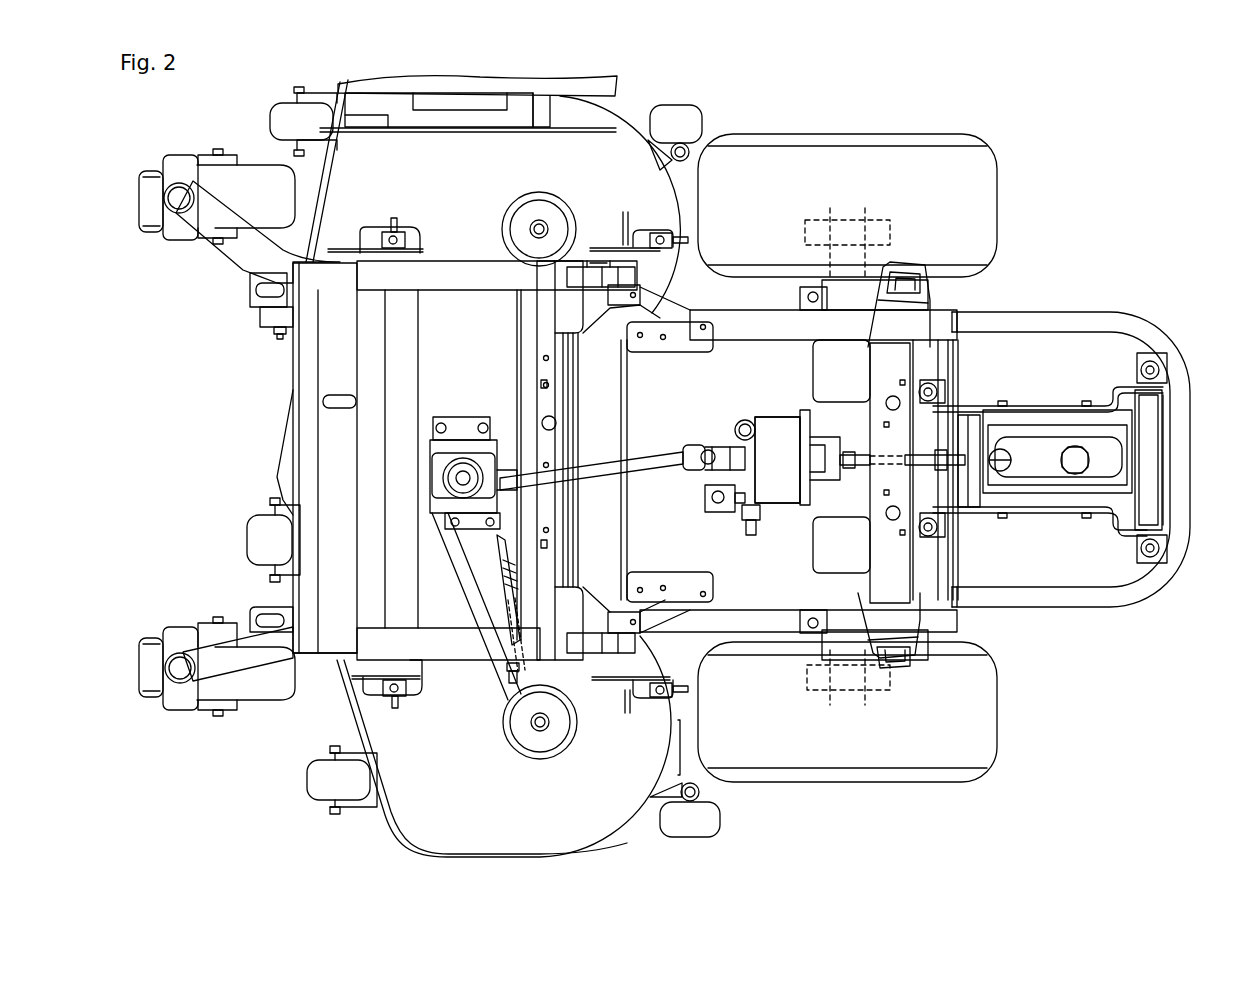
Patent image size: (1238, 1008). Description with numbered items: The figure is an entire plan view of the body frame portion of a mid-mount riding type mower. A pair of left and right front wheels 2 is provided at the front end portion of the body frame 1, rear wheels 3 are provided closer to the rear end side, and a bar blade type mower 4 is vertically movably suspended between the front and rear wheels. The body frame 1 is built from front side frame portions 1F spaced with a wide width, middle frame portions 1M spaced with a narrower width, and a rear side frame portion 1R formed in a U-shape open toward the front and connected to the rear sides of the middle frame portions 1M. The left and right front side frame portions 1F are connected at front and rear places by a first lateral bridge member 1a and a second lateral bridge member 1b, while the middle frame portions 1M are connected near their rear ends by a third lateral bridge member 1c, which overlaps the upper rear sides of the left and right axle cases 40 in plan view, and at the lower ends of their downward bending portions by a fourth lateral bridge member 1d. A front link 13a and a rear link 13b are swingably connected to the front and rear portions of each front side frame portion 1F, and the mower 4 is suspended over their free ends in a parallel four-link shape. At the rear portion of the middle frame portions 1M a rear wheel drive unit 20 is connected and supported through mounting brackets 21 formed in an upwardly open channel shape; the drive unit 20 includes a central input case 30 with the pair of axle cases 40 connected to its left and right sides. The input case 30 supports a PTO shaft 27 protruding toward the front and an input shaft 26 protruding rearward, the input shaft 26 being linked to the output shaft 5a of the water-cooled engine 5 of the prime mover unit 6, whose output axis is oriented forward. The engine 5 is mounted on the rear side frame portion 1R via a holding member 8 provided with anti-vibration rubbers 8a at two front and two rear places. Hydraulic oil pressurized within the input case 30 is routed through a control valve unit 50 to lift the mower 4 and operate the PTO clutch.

The body frame 1 is at (448, 668).
The first lateral bridge member 1a is at (297, 378).
The second lateral bridge member 1b is at (520, 396).
The third lateral bridge member 1c is at (877, 439).
The fourth lateral bridge member 1d is at (952, 384).
The front side frame portions 1F is at (457, 262).
The middle frame portions 1M is at (735, 610).
The rear side frame portion 1R is at (1055, 607).
The front wheels 2 is at (138, 200).
The rear wheels 3 is at (995, 195).
The mower 4 is at (384, 816).
The engine 5 is at (1125, 455).
The output shaft 5a is at (945, 465).
The prime mover unit 6 is at (1140, 300).
The holding member 8 is at (1050, 406).
The anti-vibration rubbers 8a is at (936, 383).
The front link 13a is at (355, 255).
The rear link 13b is at (600, 255).
The rear wheel drive unit 20 is at (780, 400).
The mounting brackets 21 is at (800, 297).
The input shaft 26 is at (848, 468).
The PTO shaft 27 is at (745, 453).
The input case 30 is at (758, 417).
The axle cases 40 is at (812, 370).
The control valve unit 50 is at (735, 490).